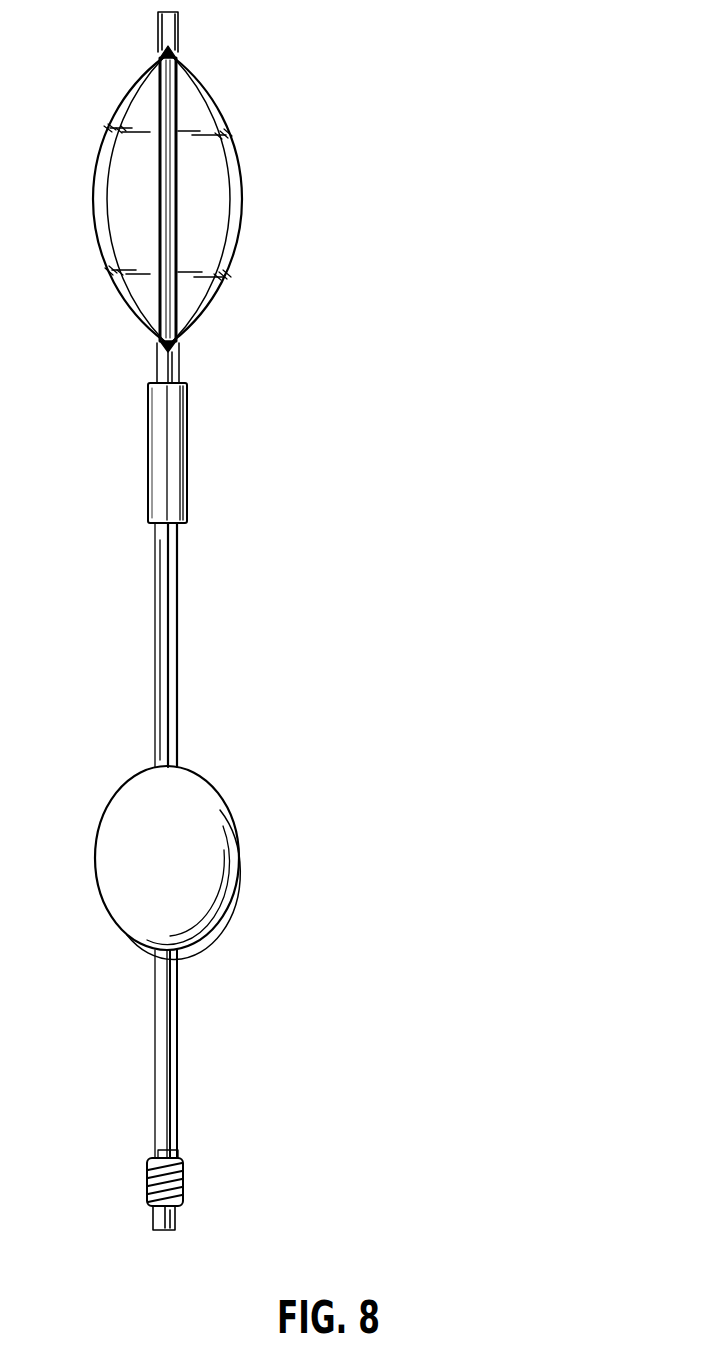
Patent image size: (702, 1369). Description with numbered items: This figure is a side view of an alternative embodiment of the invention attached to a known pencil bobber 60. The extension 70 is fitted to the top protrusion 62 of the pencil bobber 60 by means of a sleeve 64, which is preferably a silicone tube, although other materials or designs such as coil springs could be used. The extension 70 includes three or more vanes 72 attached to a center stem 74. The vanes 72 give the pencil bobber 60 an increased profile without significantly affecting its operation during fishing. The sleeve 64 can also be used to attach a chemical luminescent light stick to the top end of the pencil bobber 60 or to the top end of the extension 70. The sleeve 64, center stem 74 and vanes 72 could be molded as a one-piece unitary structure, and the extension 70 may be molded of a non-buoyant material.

The pencil bobber 60 is at (278, 718).
The top protrusion 62 is at (178, 608).
The sleeve 64 is at (187, 415).
The extension 70 is at (302, 136).
The vanes 72 is at (160, 58).
The center stem 74 is at (181, 358).